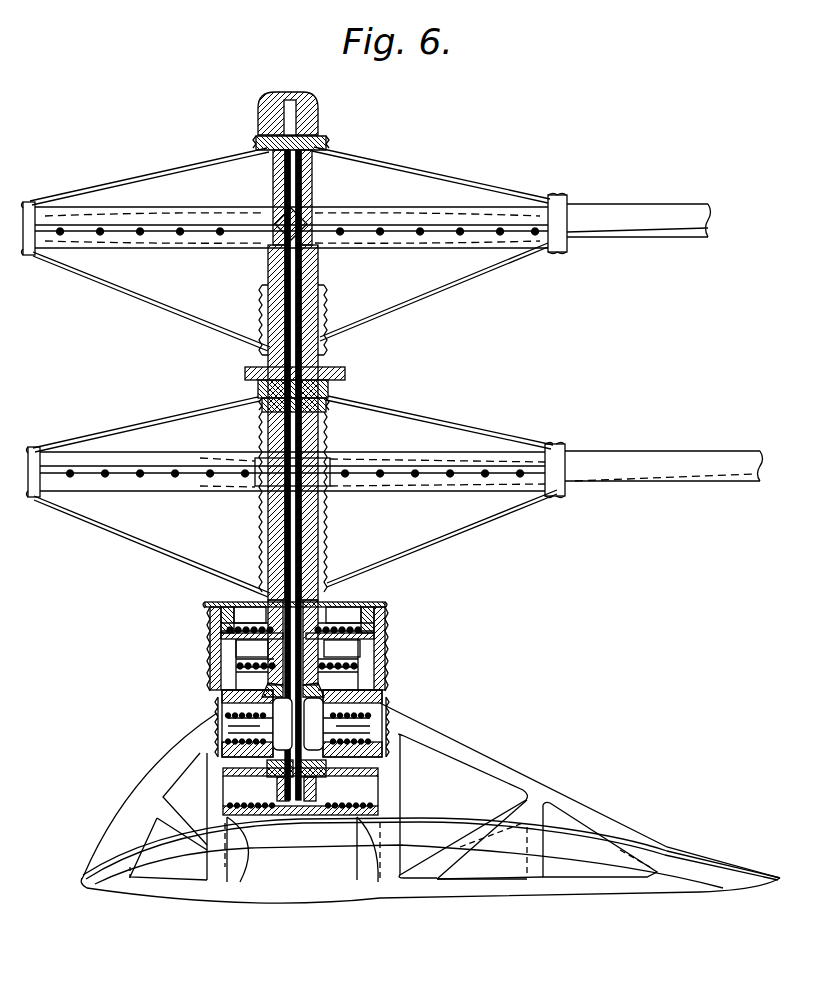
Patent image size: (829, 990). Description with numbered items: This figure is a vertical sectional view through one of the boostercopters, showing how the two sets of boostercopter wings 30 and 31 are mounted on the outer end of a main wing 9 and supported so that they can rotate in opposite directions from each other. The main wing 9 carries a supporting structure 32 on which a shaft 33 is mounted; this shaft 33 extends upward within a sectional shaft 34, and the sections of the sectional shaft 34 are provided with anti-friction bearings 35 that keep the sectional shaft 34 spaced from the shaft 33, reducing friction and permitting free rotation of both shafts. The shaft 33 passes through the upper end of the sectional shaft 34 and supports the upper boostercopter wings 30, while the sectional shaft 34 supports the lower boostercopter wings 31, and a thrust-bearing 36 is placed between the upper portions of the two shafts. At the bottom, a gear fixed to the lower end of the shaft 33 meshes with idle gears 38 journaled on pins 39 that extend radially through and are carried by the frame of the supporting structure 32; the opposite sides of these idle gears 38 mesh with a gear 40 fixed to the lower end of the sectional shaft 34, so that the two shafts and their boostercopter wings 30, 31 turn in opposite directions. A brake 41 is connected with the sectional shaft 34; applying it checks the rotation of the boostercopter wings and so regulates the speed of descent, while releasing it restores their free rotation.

The main wings 9 is at (473, 870).
The boostercopter wings 30 is at (330, 212).
The boostercopter wings 31 is at (362, 458).
The supporting structure 32 is at (380, 703).
The shaft 33 is at (298, 815).
The sectional shaft 34 is at (320, 502).
The anti-friction bearings 35 is at (262, 398).
The thrust-bearing 36 is at (340, 383).
The idle gears 38 is at (225, 705).
The pins 39 is at (222, 673).
The gear 40 is at (380, 759).
The brake 41 is at (388, 624).